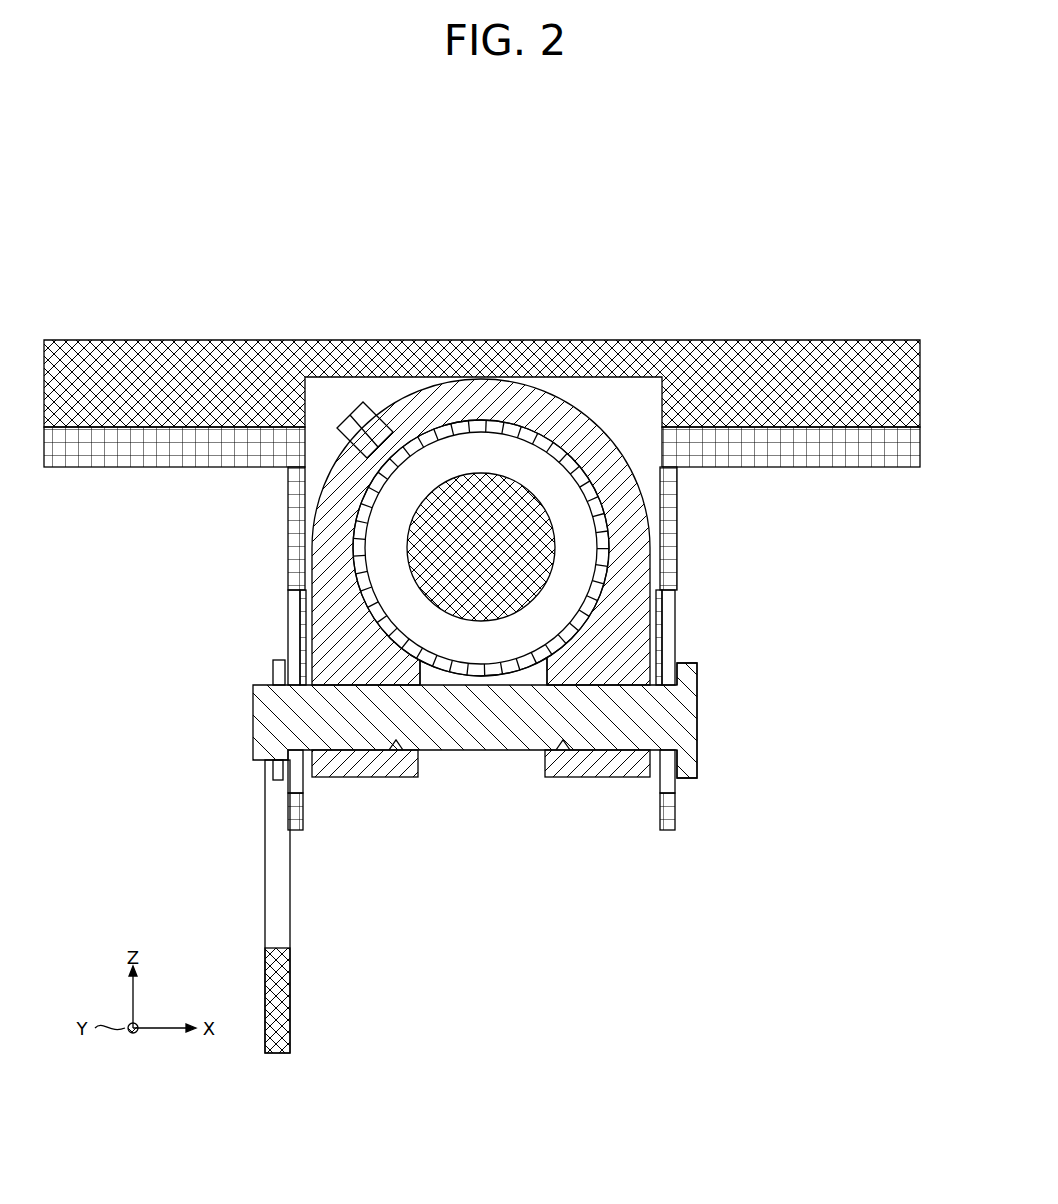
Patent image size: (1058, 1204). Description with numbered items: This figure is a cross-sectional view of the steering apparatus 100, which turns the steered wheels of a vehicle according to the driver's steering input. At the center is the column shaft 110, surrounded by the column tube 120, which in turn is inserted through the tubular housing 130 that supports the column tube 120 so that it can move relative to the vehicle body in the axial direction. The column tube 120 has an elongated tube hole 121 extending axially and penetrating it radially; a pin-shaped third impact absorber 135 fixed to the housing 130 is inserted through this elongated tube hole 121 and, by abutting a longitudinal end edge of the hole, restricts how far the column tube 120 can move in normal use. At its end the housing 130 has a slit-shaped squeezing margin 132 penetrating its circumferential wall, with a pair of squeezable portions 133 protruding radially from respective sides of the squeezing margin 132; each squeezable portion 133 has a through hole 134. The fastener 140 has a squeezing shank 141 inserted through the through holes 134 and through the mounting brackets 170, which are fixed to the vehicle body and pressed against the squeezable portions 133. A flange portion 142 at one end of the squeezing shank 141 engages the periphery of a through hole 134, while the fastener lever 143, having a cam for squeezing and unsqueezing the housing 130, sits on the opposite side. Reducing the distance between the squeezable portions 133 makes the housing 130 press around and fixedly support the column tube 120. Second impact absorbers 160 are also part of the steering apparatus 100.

The steering apparatus 100 is at (692, 212).
The column shaft 110 is at (407, 582).
The column tube 120 is at (437, 438).
The elongated tube hole 121 is at (348, 470).
The housing 130 is at (512, 378).
The squeezing margin 132 is at (440, 678).
The squeezable portions 133 is at (340, 780).
The through hole 134 is at (396, 748).
The third impact absorber 135 is at (346, 424).
The fastener 140 is at (700, 668).
The squeezing shank 141 is at (505, 752).
The flange portion 142 is at (695, 779).
The fastener lever 143 is at (263, 975).
The second impact absorbers 160 is at (300, 633).
The mounting brackets 170 is at (905, 468).